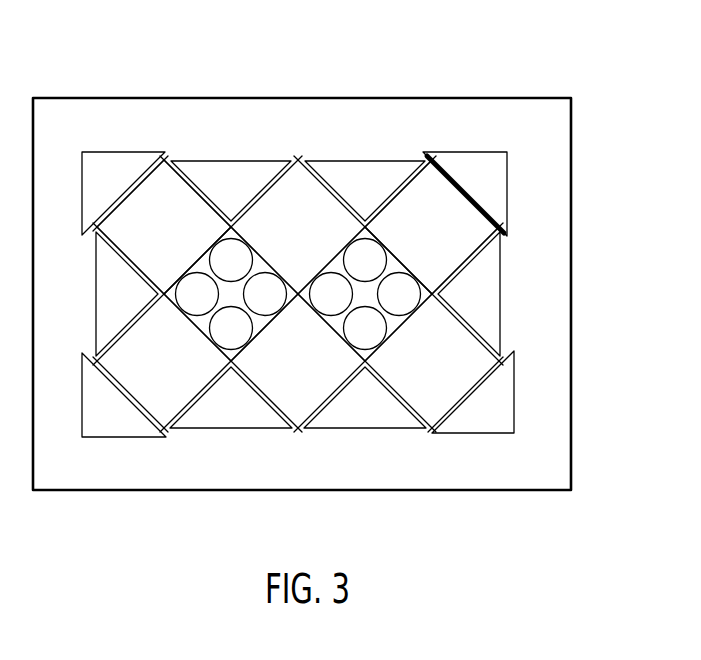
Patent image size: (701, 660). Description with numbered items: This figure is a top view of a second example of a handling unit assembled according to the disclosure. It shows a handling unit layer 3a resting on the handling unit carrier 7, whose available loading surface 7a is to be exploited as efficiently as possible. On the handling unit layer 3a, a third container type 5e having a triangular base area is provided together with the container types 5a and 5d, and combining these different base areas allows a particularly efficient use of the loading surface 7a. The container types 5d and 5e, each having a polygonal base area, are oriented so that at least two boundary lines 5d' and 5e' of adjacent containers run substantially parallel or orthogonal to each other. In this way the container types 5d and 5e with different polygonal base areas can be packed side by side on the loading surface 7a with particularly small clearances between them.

The handling unit layer 3a is at (202, 499).
The container type 5a is at (235, 253).
The container type 5d is at (164, 170).
The boundary line 5d' is at (499, 227).
The third container type 5e is at (365, 134).
The boundary line 5e' is at (535, 294).
The handling unit carrier 7 is at (571, 147).
The loading surface 7a is at (553, 316).